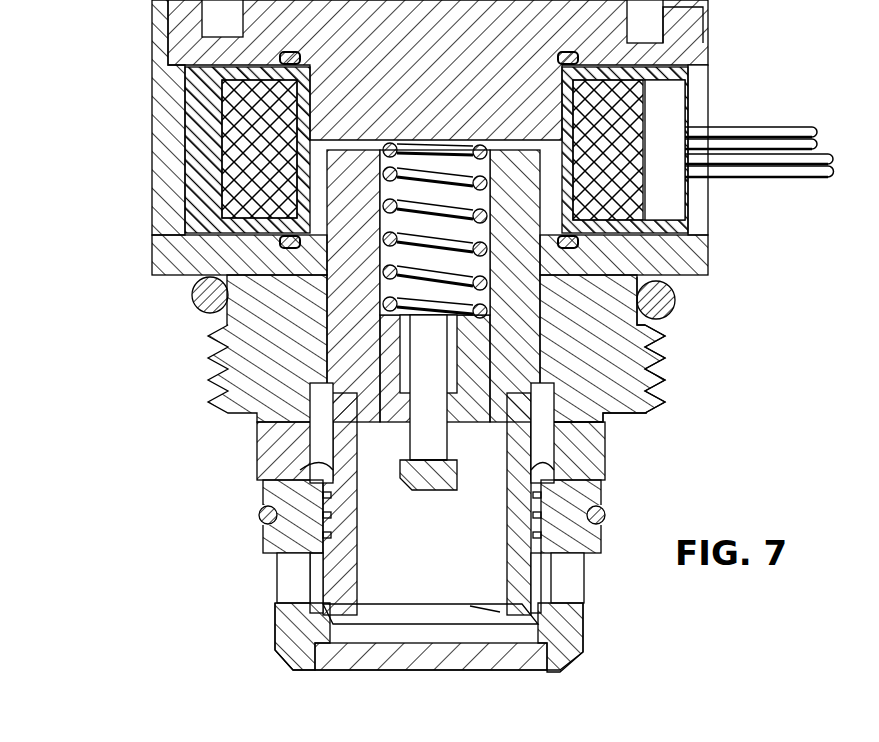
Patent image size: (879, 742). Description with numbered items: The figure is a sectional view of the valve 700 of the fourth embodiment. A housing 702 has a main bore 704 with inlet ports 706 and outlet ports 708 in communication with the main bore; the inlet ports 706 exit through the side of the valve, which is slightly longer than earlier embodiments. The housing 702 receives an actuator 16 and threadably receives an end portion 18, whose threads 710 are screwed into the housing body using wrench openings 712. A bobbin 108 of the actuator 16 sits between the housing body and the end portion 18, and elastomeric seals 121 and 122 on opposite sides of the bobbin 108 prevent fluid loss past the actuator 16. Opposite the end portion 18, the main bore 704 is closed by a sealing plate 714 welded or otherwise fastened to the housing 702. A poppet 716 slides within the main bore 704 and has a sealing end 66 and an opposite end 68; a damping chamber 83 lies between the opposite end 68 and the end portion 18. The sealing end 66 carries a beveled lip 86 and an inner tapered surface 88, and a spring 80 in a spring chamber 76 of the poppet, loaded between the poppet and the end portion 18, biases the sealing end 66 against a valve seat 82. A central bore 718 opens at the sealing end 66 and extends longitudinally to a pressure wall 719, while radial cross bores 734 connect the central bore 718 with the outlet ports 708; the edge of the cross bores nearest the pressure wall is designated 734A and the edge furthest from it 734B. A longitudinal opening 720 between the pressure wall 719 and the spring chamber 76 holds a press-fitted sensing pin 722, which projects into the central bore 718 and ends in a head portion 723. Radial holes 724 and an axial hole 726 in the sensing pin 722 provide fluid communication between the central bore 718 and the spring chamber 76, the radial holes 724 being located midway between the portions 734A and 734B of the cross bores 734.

The end portion 18 is at (176, 30).
The bobbin member 108 is at (200, 69).
The housing 702 is at (152, 150).
The opposite end 68 is at (340, 174).
The spring chamber 76 is at (152, 266).
The spring 80 is at (392, 300).
The poppet 716 is at (247, 346).
The cross bore portion nearest pressure wall 734A is at (337, 407).
The radial holes 724 is at (420, 445).
The cross bore portion furthest from pressure wall 734B is at (398, 463).
The radial cross bores 734 is at (554, 455).
The sensing pin 722 is at (462, 475).
The head portion 723 is at (442, 492).
The main bore 704 is at (656, 334).
The longitudinal opening 720 is at (652, 373).
The axial hole 726 is at (648, 403).
The pressure wall 719 is at (545, 437).
The outlet ports 708 is at (578, 476).
The inlet ports 706 is at (288, 600).
The central bore 718 is at (358, 569).
The sealing end 66 is at (350, 589).
The inner tapered surface 88 is at (490, 611).
The valve 700 is at (272, 641).
The beveled lip 86 is at (333, 622).
The sealing plate 714 is at (432, 663).
The valve seat 82 is at (555, 660).
The wrench openings 712 is at (705, 4).
The threads 710 is at (697, 42).
The second elastomeric seal 122 is at (680, 66).
The actuator 16 is at (683, 98).
The damping chamber 83 is at (617, 165).
The elastomeric seal 121 is at (640, 238).